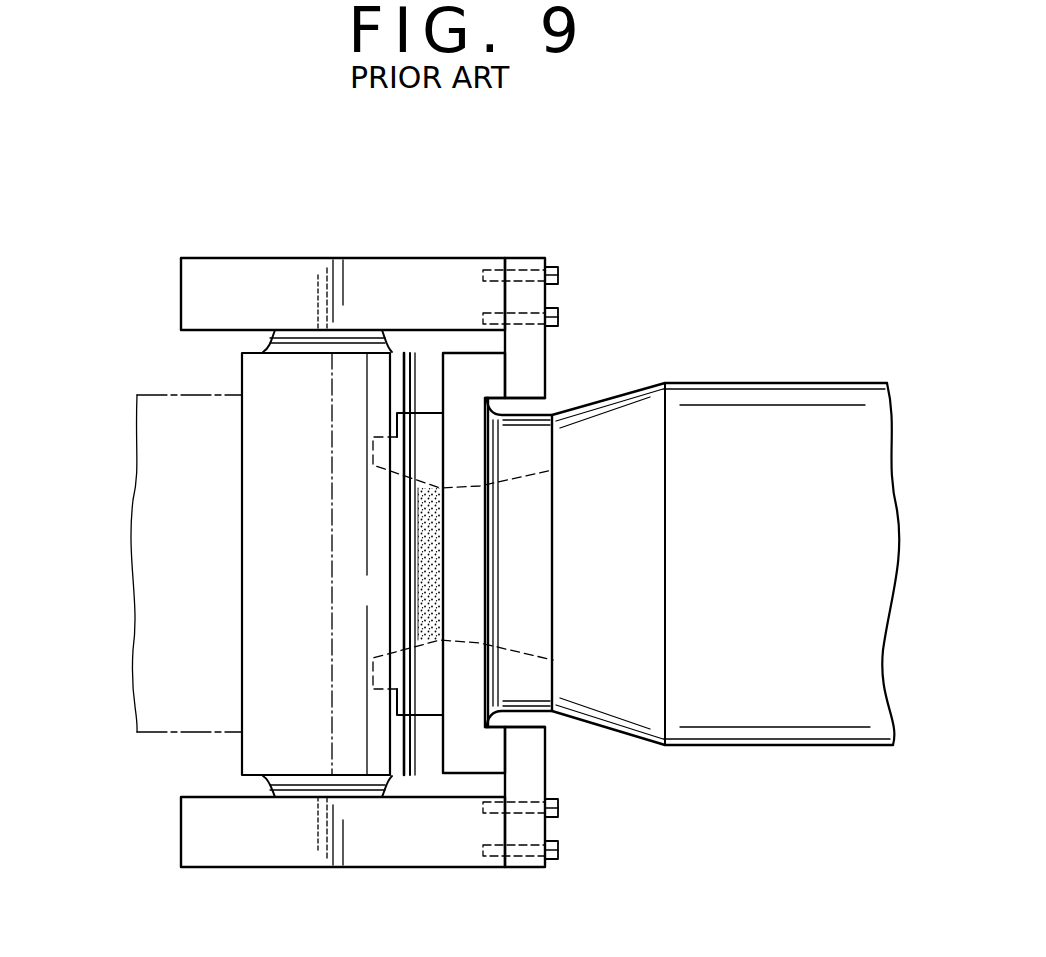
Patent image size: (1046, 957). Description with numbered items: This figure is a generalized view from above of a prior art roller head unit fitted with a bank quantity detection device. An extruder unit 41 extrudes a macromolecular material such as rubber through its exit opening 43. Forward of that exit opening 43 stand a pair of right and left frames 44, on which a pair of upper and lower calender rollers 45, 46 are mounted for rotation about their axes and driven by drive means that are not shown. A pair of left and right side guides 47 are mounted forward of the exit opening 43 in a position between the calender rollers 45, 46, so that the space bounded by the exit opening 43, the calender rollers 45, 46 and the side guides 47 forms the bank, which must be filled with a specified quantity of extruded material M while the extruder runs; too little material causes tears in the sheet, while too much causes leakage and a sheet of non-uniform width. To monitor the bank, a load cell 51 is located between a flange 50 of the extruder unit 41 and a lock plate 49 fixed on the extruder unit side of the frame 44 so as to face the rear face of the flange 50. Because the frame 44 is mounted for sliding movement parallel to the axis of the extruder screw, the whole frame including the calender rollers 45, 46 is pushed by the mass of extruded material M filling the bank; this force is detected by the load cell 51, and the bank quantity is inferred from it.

The extruder unit 41 is at (758, 400).
The exit opening 43 is at (498, 495).
The frame 44 is at (283, 272).
The calender roller 45 is at (254, 500).
The calender roller 46 is at (140, 563).
The side guide 47 is at (432, 425).
The lock plate 49 is at (532, 298).
The flange 50 is at (465, 365).
The load cell 51 is at (497, 373).
The extruded material M is at (420, 573).